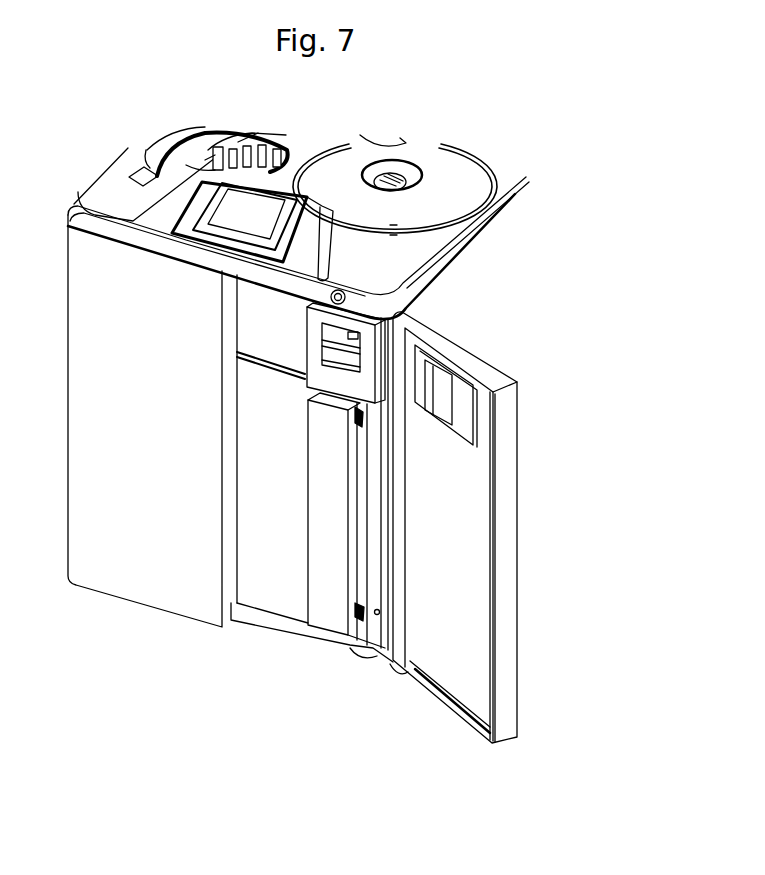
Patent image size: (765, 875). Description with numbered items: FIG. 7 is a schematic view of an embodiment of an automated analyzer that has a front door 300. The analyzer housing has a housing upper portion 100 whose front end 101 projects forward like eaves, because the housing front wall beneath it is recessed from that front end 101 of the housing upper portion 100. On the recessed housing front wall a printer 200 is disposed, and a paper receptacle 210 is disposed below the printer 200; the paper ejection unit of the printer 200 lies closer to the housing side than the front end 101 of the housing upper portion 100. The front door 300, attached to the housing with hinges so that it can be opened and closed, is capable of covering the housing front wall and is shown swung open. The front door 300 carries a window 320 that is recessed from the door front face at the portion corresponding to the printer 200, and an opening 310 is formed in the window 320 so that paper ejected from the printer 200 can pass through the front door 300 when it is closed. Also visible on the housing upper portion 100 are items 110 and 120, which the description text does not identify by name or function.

The housing upper portion 100 is at (393, 257).
The front end of the housing upper portion 101 is at (142, 242).
The disc magazine 110 is at (177, 152).
The disc 120 is at (472, 163).
The printer 200 is at (315, 332).
The paper receptacle 210 is at (315, 508).
The front door 300 is at (505, 518).
The opening 310 is at (443, 402).
The window 320 is at (462, 385).